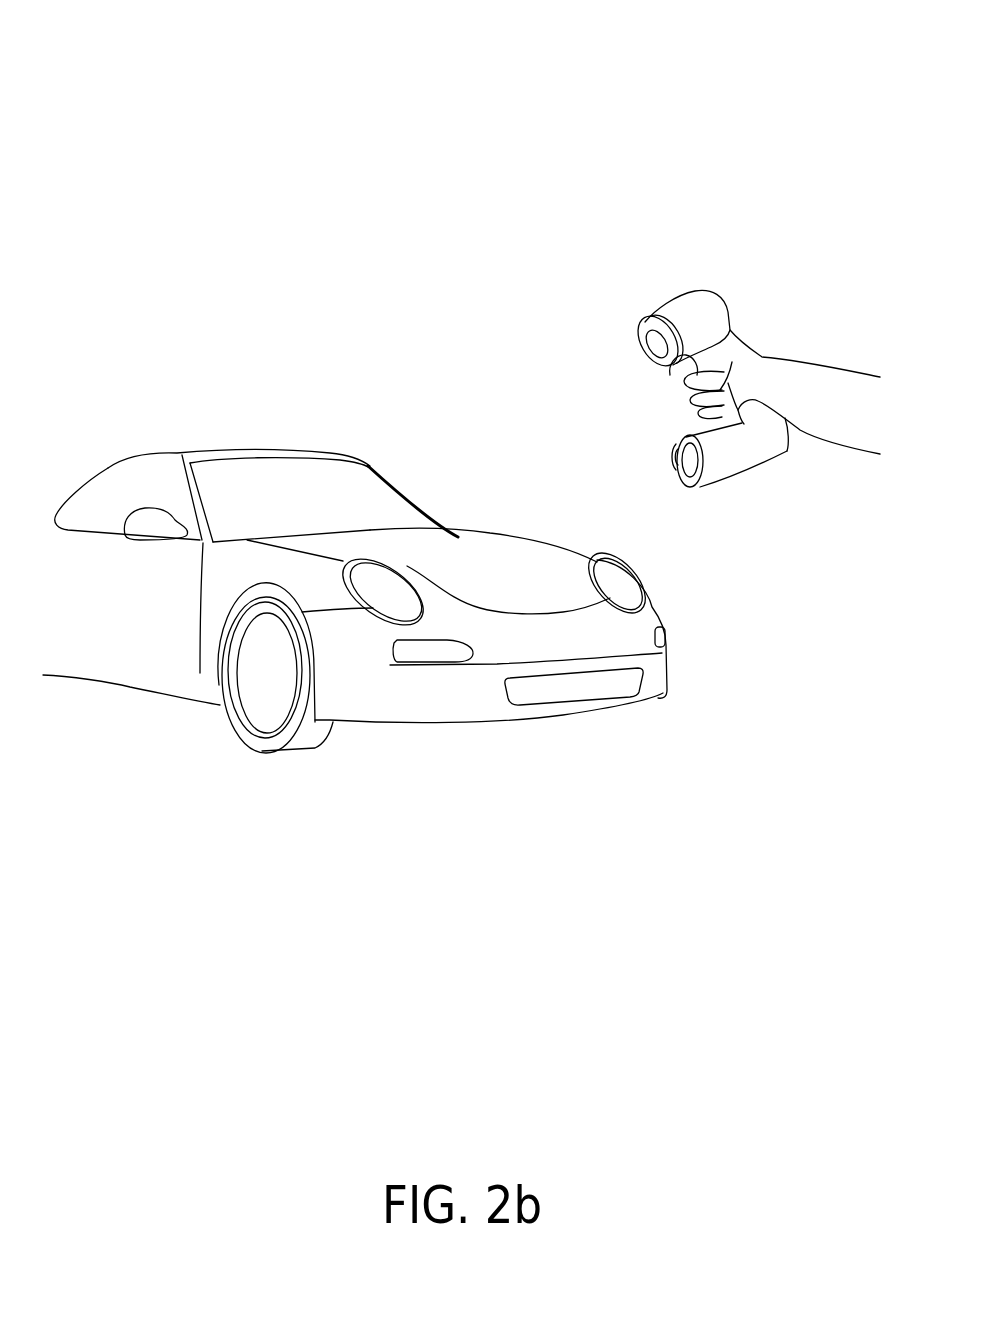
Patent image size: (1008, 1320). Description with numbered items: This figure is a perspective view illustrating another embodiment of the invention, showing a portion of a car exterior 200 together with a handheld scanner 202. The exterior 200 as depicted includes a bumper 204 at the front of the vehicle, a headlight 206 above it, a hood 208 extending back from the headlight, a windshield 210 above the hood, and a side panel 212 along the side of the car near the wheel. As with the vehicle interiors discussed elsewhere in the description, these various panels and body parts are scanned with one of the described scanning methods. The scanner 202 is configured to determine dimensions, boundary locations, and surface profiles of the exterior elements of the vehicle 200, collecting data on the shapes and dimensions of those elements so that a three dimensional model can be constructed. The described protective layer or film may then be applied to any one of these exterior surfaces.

The car exterior 200 is at (158, 97).
The scanner 202 is at (740, 465).
The bumper 204 is at (632, 645).
The headlight 206 is at (623, 588).
The hood 208 is at (520, 556).
The windshield 210 is at (397, 498).
The side panel 212 is at (212, 680).